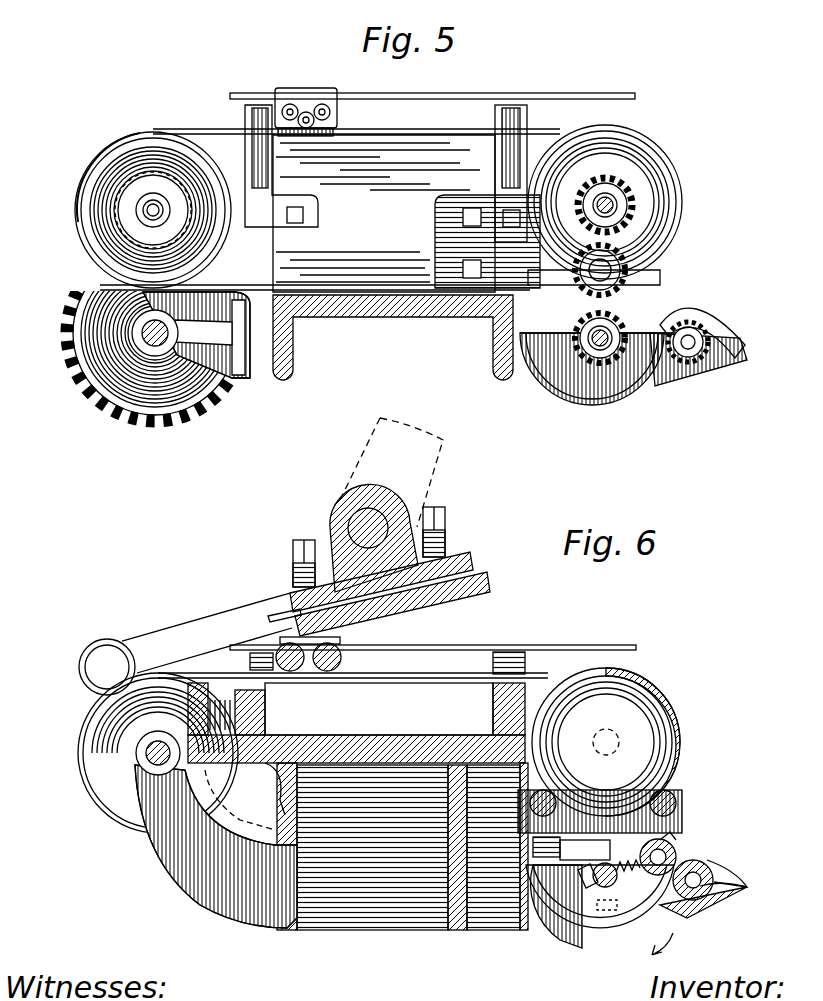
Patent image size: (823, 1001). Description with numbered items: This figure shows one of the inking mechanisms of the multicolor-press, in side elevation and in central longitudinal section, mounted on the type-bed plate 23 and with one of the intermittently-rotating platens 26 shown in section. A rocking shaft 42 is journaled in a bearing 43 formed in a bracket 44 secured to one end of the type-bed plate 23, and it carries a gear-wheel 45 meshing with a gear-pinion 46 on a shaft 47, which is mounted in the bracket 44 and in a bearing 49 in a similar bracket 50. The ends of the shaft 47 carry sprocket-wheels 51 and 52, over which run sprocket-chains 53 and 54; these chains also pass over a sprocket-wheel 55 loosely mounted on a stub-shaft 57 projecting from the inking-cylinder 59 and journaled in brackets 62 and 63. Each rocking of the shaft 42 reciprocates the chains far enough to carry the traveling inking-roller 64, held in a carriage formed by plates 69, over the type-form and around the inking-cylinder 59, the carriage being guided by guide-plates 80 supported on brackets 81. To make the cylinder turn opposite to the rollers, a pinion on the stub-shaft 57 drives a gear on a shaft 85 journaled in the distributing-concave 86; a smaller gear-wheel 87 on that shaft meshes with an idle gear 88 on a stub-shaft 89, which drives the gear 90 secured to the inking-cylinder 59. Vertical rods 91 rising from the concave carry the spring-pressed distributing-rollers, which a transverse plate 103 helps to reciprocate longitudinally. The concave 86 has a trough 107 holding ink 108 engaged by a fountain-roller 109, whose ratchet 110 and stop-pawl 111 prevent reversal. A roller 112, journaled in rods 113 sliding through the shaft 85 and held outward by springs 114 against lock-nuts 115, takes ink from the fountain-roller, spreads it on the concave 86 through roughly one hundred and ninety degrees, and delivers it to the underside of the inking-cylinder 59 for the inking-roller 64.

In FIG. 5, the type-bed plate 23 is at (403, 305).
In FIG. 6, the type-bed plate 23 is at (280, 778).
In FIG. 6, the platen 26 is at (472, 556).
In FIG. 5, the shaft 42 is at (150, 345).
In FIG. 5, the bearing 43 is at (168, 348).
In FIG. 5, the bracket 44 is at (222, 385).
In FIG. 5, the gear-wheel 45 is at (95, 392).
In FIG. 5, the gear-pinion 46 is at (158, 133).
In FIG. 5, the shaft 47 is at (153, 210).
In FIG. 6, the shaft 47 is at (150, 755).
In FIG. 6, the bearing 49 is at (82, 682).
In FIG. 6, the bracket 50 is at (185, 882).
In FIG. 5, the sprocket-wheel 51 is at (100, 238).
In FIG. 6, the sprocket-wheel 52 is at (117, 797).
In FIG. 5, the sprocket-chain 53 is at (405, 132).
In FIG. 6, the sprocket-chain 54 is at (418, 678).
In FIG. 5, the sprocket-wheel 55 is at (630, 160).
In FIG. 5, the stub-shaft 57 is at (612, 200).
In FIG. 6, the inking-cylinder 59 is at (597, 812).
In FIG. 5, the bracket 62 is at (447, 240).
In FIG. 6, the bracket 63 is at (329, 672).
In FIG. 6, the inking-roller 64 is at (290, 672).
In FIG. 5, the plate 69 is at (305, 100).
In FIG. 5, the guide-plate 80 is at (466, 100).
In FIG. 6, the guide-plate 80 is at (598, 645).
In FIG. 5, the bracket 81 is at (495, 175).
In FIG. 6, the bracket 81 is at (520, 652).
In FIG. 5, the shaft 85 is at (600, 362).
In FIG. 6, the shaft 85 is at (600, 887).
In FIG. 5, the distributing-concave 86 is at (548, 387).
In FIG. 6, the distributing-concave 86 is at (606, 942).
In FIG. 5, the gear-wheel 87 is at (648, 398).
In FIG. 5, the idle gear 88 is at (660, 250).
In FIG. 5, the stub-shaft 89 is at (612, 276).
In FIG. 5, the gear 90 is at (630, 205).
In FIG. 6, the vertical rod 91 is at (402, 846).
In FIG. 6, the transverse plate 103 is at (571, 849).
In FIG. 6, the trough 107 is at (722, 880).
In FIG. 6, the ink 108 is at (747, 887).
In FIG. 6, the fountain-roller 109 is at (704, 862).
In FIG. 5, the ratchet 110 is at (695, 362).
In FIG. 5, the stop-pawl 111 is at (732, 331).
In FIG. 6, the roller 112 is at (672, 847).
In FIG. 6, the rod 113 is at (635, 873).
In FIG. 6, the helically-coiled expanding spring 114 is at (680, 830).
In FIG. 6, the lock-nut 115 is at (582, 880).